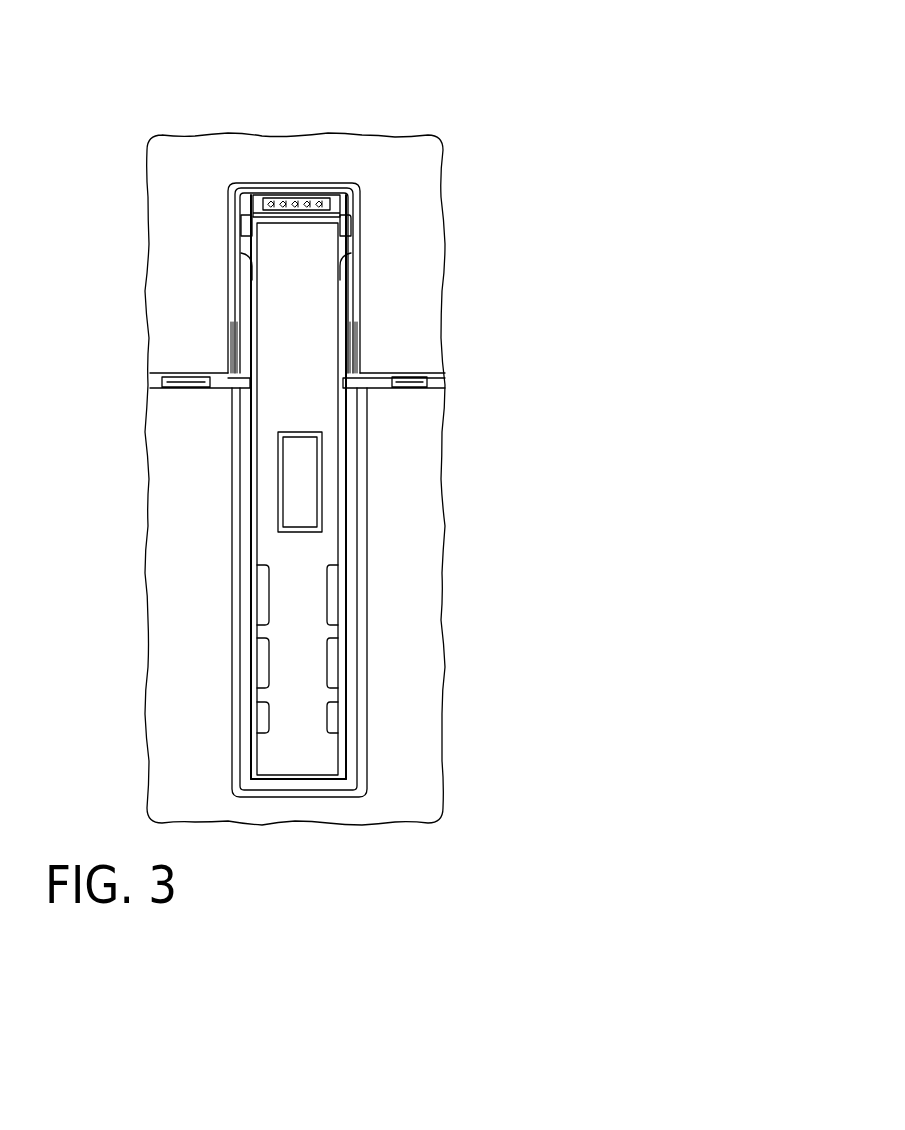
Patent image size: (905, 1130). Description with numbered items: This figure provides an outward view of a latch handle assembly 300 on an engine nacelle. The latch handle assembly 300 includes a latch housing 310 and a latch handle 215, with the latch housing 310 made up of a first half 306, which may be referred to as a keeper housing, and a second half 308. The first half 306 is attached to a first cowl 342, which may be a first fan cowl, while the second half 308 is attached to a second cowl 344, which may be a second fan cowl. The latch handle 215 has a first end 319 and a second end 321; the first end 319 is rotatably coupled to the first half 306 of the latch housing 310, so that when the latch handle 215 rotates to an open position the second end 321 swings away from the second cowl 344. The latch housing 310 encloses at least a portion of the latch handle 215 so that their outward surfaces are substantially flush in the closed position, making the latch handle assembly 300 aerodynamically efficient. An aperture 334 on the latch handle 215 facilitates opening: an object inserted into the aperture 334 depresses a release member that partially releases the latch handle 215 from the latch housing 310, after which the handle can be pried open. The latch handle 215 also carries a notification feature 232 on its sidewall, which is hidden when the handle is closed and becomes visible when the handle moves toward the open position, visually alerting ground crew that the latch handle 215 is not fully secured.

The latch handle assembly 300 is at (462, 92).
The first half 306 is at (353, 225).
The second half 308 is at (410, 698).
The latch housing 310 is at (247, 467).
The first end 319 is at (295, 192).
The second end 321 is at (302, 798).
The aperture 334 is at (322, 497).
The first cowl 342 is at (212, 191).
The second cowl 344 is at (212, 536).
The latch handle 215 is at (317, 594).
The notification feature 232 is at (258, 605).